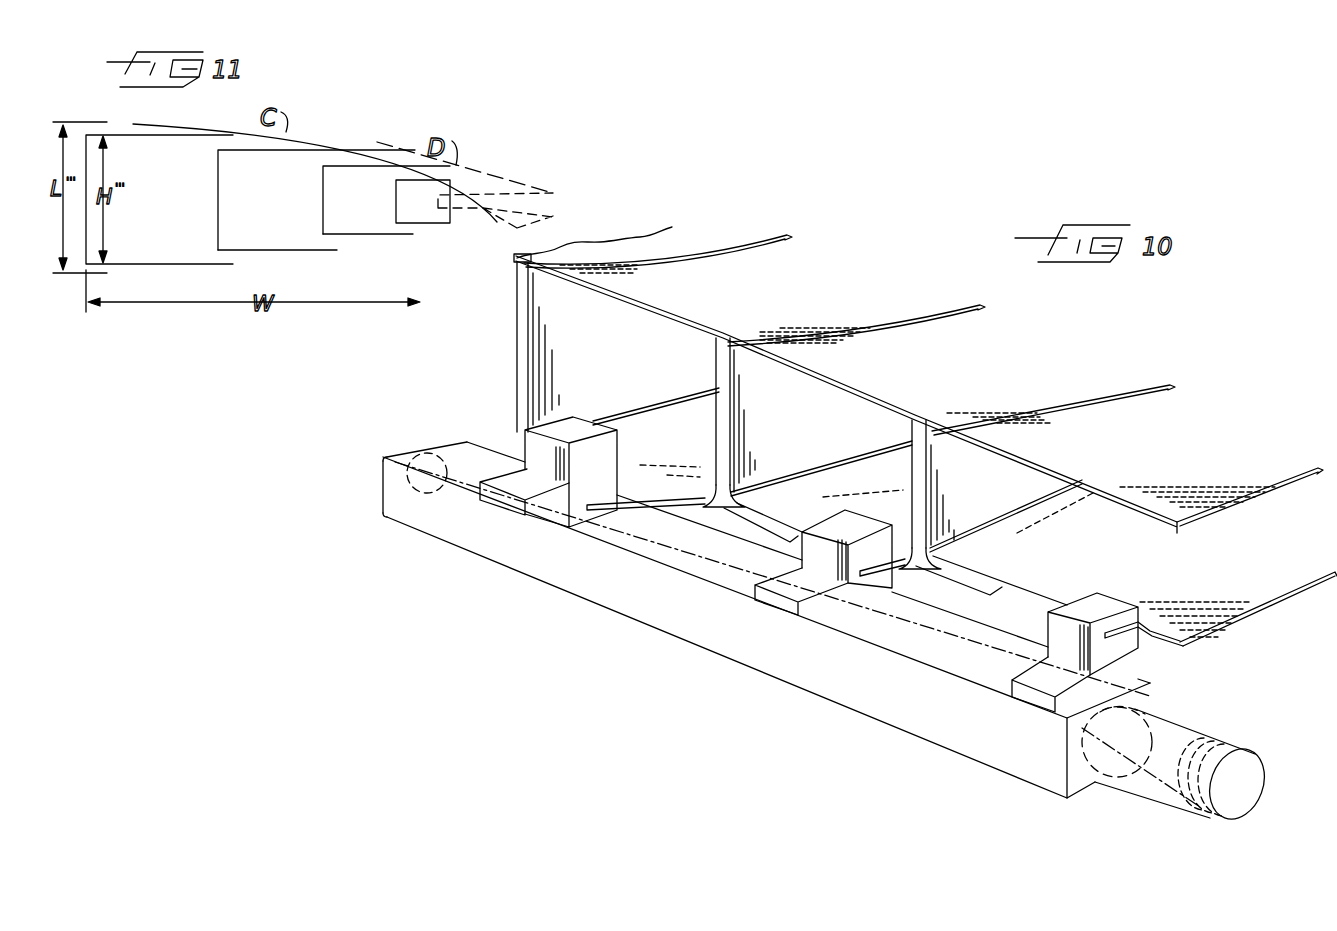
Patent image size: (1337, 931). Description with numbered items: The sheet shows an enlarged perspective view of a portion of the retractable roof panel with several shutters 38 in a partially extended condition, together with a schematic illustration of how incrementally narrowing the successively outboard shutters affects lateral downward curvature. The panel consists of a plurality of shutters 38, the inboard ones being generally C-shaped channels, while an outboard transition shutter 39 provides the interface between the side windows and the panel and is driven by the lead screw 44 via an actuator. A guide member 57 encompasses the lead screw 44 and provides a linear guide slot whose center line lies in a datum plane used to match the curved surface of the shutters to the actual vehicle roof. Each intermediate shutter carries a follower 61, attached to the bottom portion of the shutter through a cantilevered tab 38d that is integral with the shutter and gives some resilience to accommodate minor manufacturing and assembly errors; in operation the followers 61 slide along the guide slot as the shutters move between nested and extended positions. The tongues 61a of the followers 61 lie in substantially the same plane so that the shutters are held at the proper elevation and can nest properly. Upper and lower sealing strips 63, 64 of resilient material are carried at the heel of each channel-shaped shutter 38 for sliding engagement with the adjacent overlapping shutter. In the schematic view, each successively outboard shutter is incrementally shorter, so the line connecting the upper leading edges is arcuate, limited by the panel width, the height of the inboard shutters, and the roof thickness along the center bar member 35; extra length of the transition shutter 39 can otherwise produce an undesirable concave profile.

In FIG. 11, the center bar member 35 is at (87, 122).
In FIG. 11, the shutters 38 is at (430, 223).
In FIG. 10, the shutters 38 is at (913, 343).
In FIG. 11, the transition shutter 39 is at (483, 210).
In FIG. 10, the tab 38d is at (586, 504).
In FIG. 10, the lead screw 44 is at (1213, 810).
In FIG. 10, the guide member 57 is at (588, 583).
In FIG. 10, the follower 61 is at (524, 445).
In FIG. 10, the tongue 61a is at (512, 507).
In FIG. 10, the upper sealing strip 63 is at (518, 266).
In FIG. 10, the lower sealing strip 64 is at (716, 500).